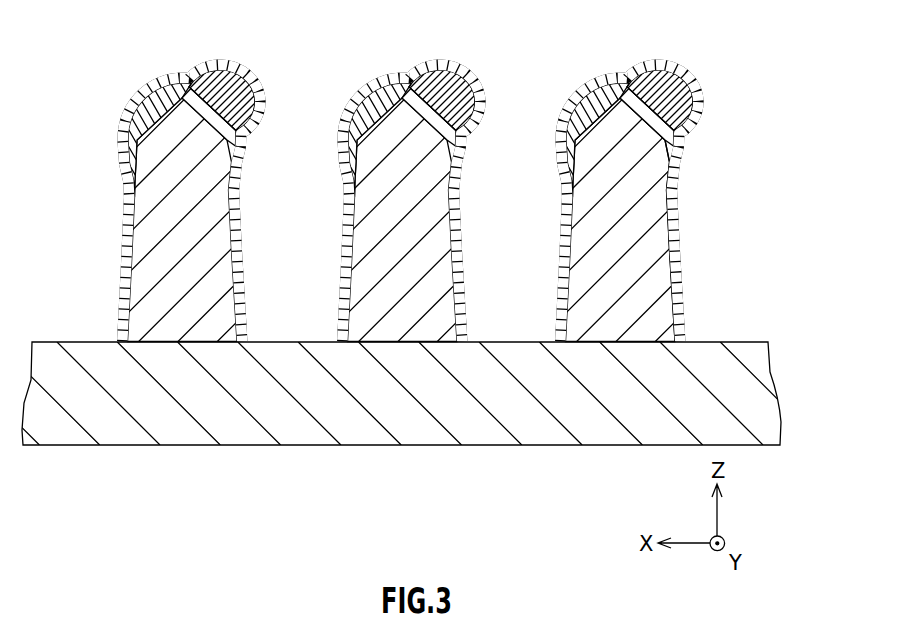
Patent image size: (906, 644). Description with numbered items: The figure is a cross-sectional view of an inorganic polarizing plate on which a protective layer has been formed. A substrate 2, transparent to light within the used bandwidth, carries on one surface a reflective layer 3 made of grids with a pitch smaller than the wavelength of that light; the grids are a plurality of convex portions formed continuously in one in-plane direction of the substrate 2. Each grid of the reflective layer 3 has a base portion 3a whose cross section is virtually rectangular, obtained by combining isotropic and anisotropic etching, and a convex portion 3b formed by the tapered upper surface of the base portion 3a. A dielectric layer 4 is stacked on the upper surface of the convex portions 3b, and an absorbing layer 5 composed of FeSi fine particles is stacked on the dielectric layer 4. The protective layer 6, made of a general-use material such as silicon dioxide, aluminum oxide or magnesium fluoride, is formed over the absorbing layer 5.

The substrate 2 is at (743, 373).
The reflective layer 3 is at (650, 215).
The base portion 3a is at (675, 265).
The convex portion 3b is at (590, 110).
The dielectric layer 4 is at (668, 145).
The absorbing layer 5 is at (673, 90).
The protective layer 6 is at (685, 168).